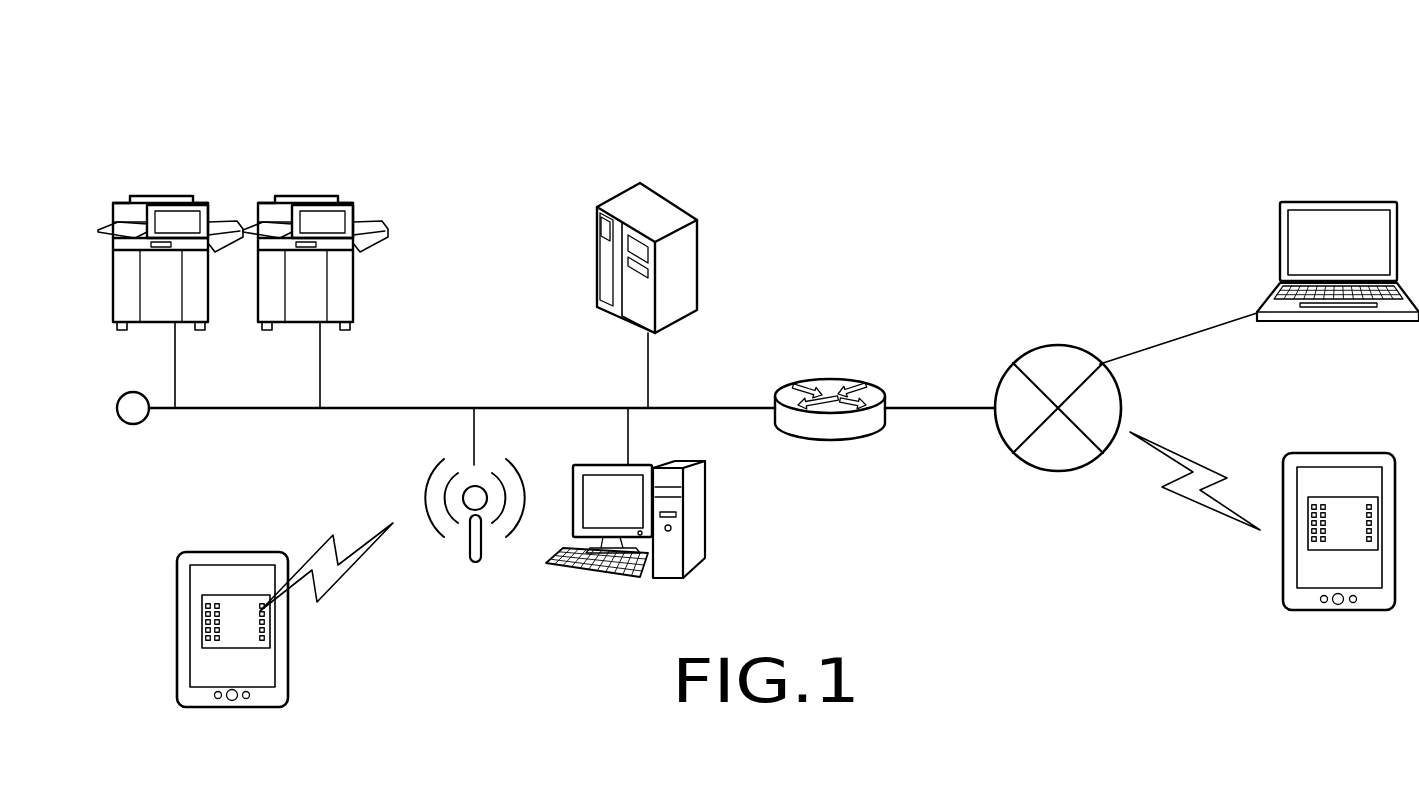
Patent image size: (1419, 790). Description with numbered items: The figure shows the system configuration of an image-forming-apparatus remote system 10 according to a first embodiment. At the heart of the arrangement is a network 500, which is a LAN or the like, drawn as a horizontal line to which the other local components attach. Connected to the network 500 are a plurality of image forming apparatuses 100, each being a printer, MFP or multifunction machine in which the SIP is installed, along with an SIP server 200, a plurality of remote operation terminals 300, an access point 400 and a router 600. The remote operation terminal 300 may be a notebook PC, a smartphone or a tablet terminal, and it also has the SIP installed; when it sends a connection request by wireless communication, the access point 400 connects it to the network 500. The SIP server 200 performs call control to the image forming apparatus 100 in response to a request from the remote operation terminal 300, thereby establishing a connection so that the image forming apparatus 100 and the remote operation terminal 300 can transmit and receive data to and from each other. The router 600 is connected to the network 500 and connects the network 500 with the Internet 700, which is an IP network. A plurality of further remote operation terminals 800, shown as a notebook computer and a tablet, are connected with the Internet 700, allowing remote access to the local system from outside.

The image-forming-apparatus remote system 10 is at (742, 101).
The image forming apparatus 100 is at (176, 200).
The SIP server 200 is at (668, 196).
The remote operation terminal 300 is at (248, 552).
The access point 400 is at (515, 472).
The network 500 is at (424, 406).
The router 600 is at (838, 378).
The Internet 700 is at (1060, 345).
The remote operation terminal 800 is at (1370, 201).